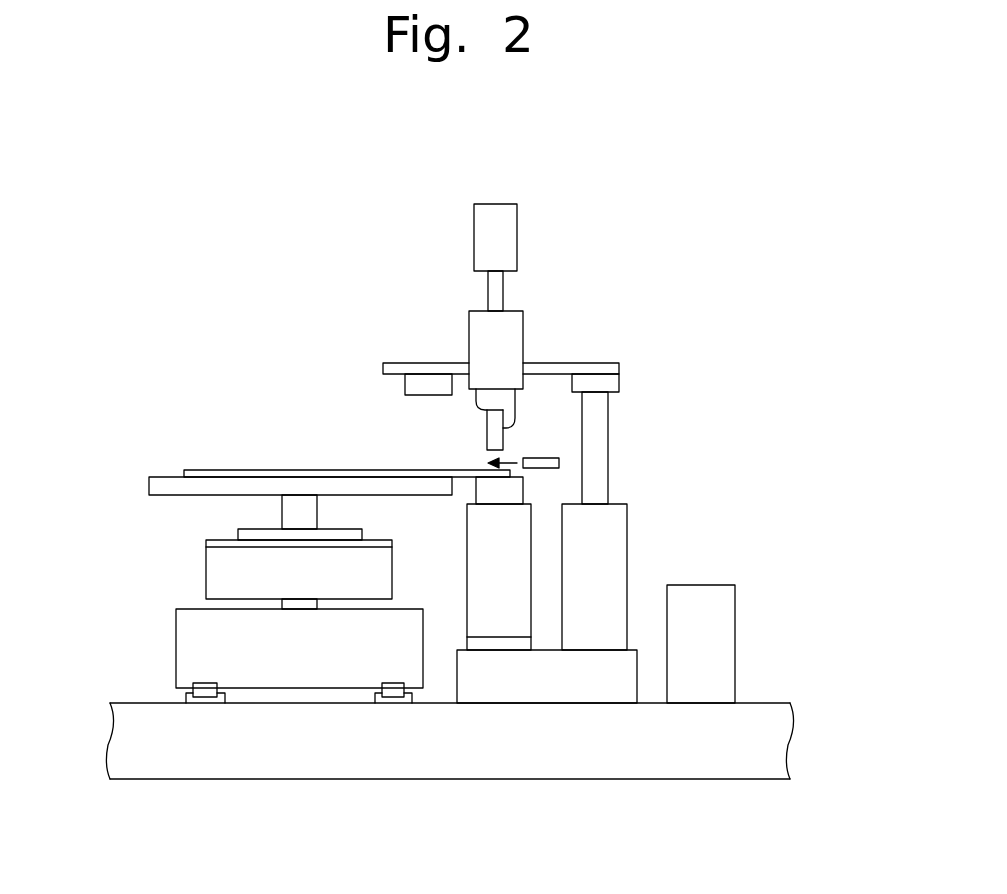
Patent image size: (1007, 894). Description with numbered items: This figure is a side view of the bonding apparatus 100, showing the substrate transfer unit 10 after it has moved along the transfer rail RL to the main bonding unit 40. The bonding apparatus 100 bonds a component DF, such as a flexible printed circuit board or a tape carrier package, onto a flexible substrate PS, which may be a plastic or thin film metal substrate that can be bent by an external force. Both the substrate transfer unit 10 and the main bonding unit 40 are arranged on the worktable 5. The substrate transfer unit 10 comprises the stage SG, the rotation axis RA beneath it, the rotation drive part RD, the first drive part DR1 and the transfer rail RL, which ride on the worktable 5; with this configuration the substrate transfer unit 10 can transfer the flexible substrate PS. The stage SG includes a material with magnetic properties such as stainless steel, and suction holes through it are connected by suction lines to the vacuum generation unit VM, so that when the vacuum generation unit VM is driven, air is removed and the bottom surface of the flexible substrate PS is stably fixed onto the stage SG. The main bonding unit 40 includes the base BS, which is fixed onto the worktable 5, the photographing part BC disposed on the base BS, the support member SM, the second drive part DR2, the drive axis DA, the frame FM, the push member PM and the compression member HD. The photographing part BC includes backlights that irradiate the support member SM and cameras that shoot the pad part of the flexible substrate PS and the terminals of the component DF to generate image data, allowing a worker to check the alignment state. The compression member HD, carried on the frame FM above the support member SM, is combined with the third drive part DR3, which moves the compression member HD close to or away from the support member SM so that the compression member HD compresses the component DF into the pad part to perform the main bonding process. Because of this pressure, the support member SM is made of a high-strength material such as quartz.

The bonding apparatus 100 is at (655, 268).
The worktable 5 is at (122, 742).
The substrate transfer unit 10 is at (73, 476).
The main bonding unit 40 is at (697, 358).
The base BS is at (567, 692).
The vacuum generation unit VM is at (720, 642).
The photographing part BC is at (477, 565).
The support member SM is at (486, 489).
The flexible substrate PS is at (312, 476).
The stage SG is at (160, 488).
The rotation axis RA is at (288, 513).
The rotation drive part RD is at (215, 577).
The first drive part DR1 is at (185, 648).
The transfer rail RL is at (193, 700).
The third drive part DR3 is at (508, 233).
The compression member HD is at (493, 432).
The component DF is at (543, 458).
The push member PM is at (412, 383).
The frame FM is at (607, 372).
The drive axis DA is at (600, 447).
The second drive part DR2 is at (615, 545).